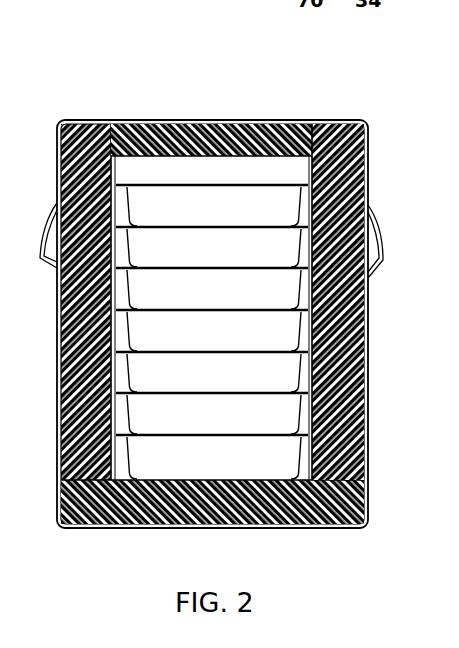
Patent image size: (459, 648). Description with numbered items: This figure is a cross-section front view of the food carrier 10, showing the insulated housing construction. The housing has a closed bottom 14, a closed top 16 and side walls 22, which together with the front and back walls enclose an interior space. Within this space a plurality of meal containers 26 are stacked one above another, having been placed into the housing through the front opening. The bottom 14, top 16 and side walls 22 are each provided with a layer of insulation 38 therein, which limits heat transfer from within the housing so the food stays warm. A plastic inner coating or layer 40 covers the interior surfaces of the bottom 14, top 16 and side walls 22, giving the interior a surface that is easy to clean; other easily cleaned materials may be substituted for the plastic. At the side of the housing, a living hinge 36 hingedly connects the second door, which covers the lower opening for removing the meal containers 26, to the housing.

The food carrier 10 is at (137, 98).
The closed bottom 14 is at (117, 528).
The closed top 16 is at (258, 120).
The side walls 22 is at (368, 399).
The meal containers 26 is at (283, 248).
The living hinge 36 is at (258, 528).
The layer of insulation 38 is at (350, 353).
The plastic inner coating or layer 40 is at (350, 317).